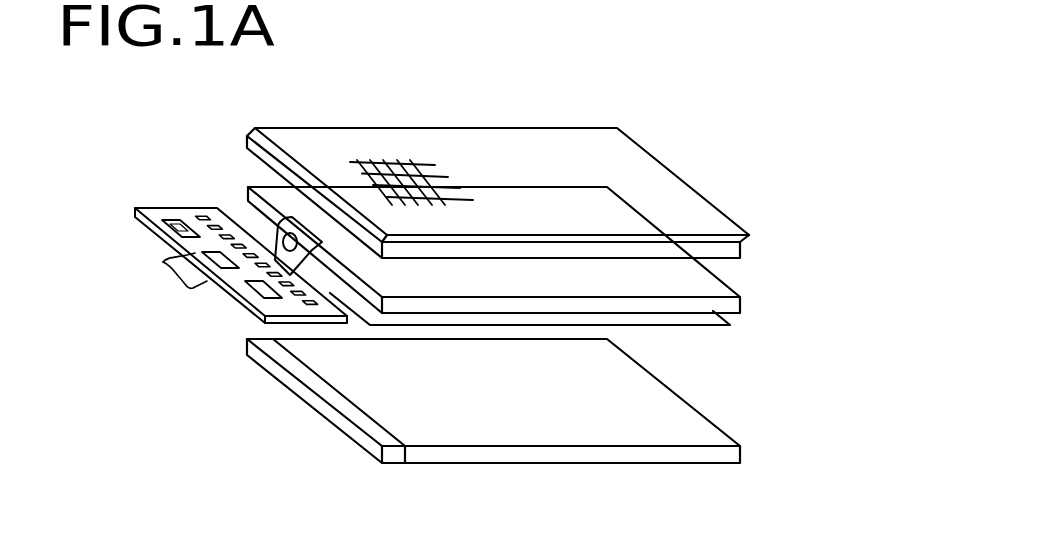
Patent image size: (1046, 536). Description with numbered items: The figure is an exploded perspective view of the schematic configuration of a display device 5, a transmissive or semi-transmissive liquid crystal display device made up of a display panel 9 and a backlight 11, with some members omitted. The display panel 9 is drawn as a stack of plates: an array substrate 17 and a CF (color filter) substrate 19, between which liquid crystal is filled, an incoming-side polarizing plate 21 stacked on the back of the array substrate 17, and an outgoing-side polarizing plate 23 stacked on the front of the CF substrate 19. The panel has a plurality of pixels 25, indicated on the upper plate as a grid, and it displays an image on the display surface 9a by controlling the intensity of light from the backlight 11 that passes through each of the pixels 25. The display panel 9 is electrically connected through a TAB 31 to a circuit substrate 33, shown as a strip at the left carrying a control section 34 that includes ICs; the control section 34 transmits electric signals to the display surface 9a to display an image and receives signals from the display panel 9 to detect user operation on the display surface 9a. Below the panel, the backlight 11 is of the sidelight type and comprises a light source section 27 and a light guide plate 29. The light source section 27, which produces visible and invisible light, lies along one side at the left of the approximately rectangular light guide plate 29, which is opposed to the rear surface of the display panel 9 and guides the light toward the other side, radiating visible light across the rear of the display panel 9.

The display device 5 is at (617, 63).
The display panel 9 is at (796, 215).
The display surface 9a is at (620, 150).
The backlight 11 is at (785, 388).
The array substrate 17 is at (742, 303).
The CF substrate 19 is at (742, 250).
The incoming-side polarizing plate 21 is at (710, 320).
The outgoing-side polarizing plate 23 is at (685, 205).
The pixels 25 is at (430, 165).
The light source section 27 is at (395, 453).
The light guide plate 29 is at (697, 430).
The TAB 31 is at (252, 218).
The circuit substrate 33 is at (217, 268).
The control section 34 is at (158, 233).